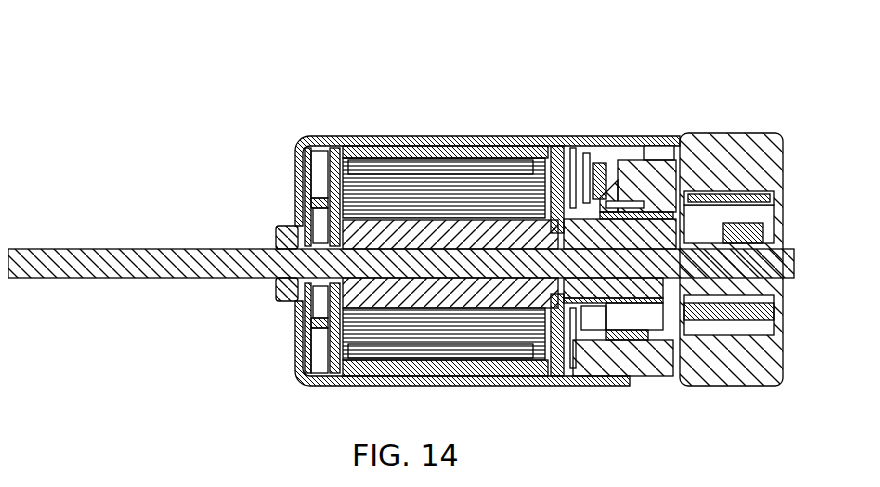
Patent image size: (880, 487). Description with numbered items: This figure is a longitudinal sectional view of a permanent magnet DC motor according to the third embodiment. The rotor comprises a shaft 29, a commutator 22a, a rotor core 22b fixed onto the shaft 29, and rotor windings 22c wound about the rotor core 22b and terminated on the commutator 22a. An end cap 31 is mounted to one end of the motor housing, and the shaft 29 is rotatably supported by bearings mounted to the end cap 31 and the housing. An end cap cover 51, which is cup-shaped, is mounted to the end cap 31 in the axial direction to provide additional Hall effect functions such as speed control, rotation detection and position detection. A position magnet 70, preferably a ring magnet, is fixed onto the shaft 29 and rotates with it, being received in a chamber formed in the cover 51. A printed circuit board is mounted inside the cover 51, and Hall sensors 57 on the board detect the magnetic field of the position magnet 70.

The shaft 29 is at (118, 243).
The commutator 22a is at (594, 218).
The rotor core 22b is at (367, 220).
The rotor windings 22c is at (446, 180).
The end cap 31 is at (618, 362).
The end cap cover 51 is at (705, 126).
The Hall sensor 57 is at (738, 187).
The position magnet 70 is at (732, 330).